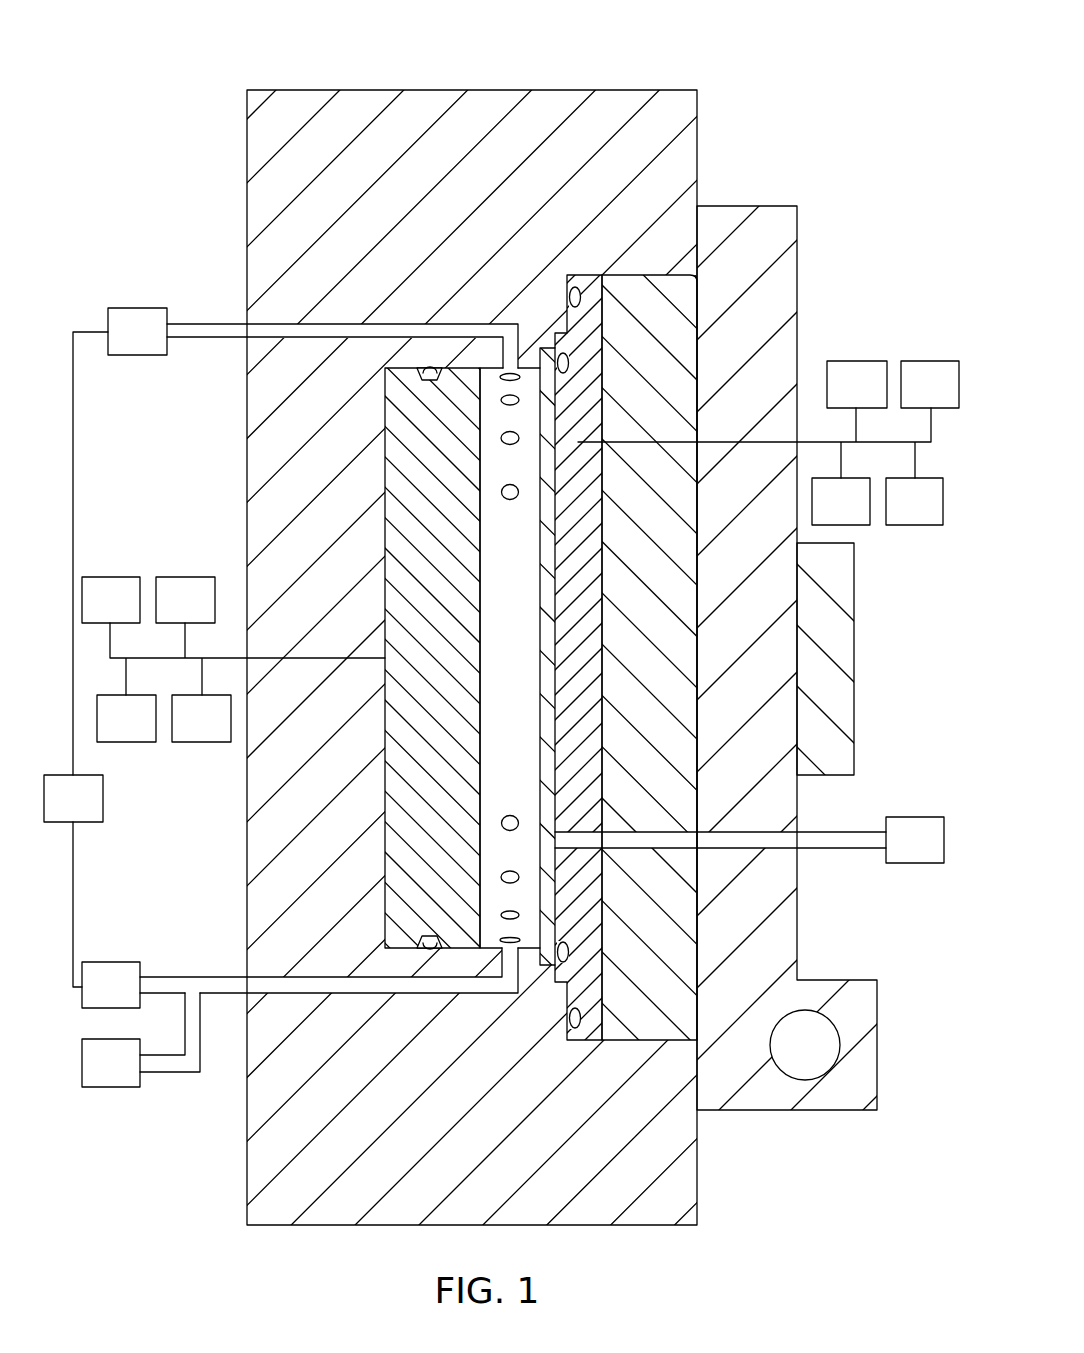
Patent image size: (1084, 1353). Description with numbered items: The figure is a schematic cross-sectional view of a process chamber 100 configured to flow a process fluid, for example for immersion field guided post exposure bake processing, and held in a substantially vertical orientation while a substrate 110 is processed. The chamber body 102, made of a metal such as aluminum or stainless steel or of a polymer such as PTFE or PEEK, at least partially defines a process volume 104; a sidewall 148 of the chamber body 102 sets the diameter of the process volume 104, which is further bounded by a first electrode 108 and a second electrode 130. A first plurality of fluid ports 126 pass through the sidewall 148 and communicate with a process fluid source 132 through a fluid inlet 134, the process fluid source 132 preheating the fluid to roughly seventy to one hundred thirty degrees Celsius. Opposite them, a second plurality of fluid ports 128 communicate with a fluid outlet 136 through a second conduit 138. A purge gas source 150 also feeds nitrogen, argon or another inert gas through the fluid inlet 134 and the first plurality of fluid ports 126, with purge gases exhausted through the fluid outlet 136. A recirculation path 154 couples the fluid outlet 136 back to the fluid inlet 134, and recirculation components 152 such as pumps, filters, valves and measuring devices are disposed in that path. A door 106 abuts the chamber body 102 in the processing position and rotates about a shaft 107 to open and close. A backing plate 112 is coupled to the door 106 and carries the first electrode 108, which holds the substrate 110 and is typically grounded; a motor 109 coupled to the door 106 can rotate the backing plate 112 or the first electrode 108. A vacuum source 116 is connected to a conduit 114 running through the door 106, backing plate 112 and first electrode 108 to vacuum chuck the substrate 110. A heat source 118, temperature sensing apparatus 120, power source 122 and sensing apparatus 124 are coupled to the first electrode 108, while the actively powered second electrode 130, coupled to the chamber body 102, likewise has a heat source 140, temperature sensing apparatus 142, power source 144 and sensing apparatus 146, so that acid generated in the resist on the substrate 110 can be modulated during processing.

The process chamber 100 is at (191, 46).
The chamber body 102 is at (503, 90).
The process volume 104 is at (487, 611).
The door 106 is at (800, 283).
The shaft 107 is at (800, 1063).
The first electrode 108 is at (590, 1025).
The motor 109 is at (855, 648).
The substrate 110 is at (528, 670).
The backing plate 112 is at (653, 1028).
The conduit 114 is at (828, 849).
The vacuum source 116 is at (896, 854).
The heat source 118 is at (822, 515).
The temperature sensing apparatus 120 is at (838, 398).
The power source 122 is at (895, 515).
The sensing apparatus 124 is at (911, 398).
The first plurality of fluid ports 126 is at (508, 823).
The second plurality of fluid ports 128 is at (506, 445).
The second electrode 130 is at (393, 808).
The process fluid source 132 is at (92, 998).
The fluid inlet 134 is at (220, 975).
The fluid outlet 136 is at (118, 345).
The second conduit 138 is at (200, 322).
The heat source 140 is at (182, 732).
The temperature sensing apparatus 142 is at (166, 613).
The power source 144 is at (107, 732).
The sensing apparatus 146 is at (92, 613).
The sidewall 148 is at (528, 367).
The purge gas source 150 is at (92, 1076).
The recirculation components 152 is at (54, 812).
The recirculation path 154 is at (85, 312).